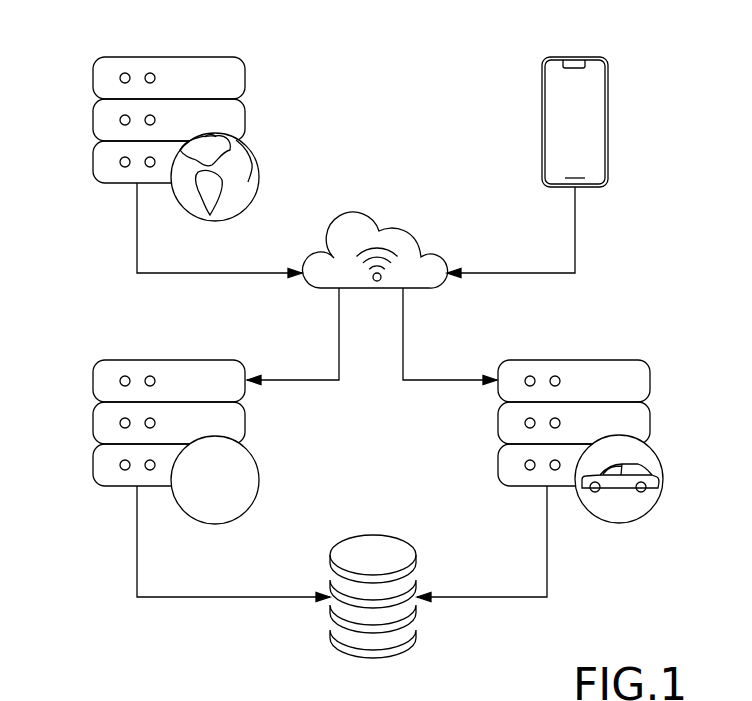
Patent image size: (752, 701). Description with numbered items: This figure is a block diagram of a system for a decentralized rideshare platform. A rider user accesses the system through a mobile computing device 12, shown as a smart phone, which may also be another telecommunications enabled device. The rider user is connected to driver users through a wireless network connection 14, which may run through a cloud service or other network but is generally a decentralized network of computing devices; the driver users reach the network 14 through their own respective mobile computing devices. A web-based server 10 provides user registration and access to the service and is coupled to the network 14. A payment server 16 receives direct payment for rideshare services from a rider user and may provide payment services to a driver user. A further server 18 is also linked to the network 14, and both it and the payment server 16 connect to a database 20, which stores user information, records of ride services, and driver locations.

The web-based server 10 is at (115, 57).
The mobile computing device 12 is at (585, 55).
The wireless network connection 14 is at (400, 232).
The payment server 16 is at (115, 360).
The vehicle server 18 is at (628, 358).
The database 20 is at (395, 533).